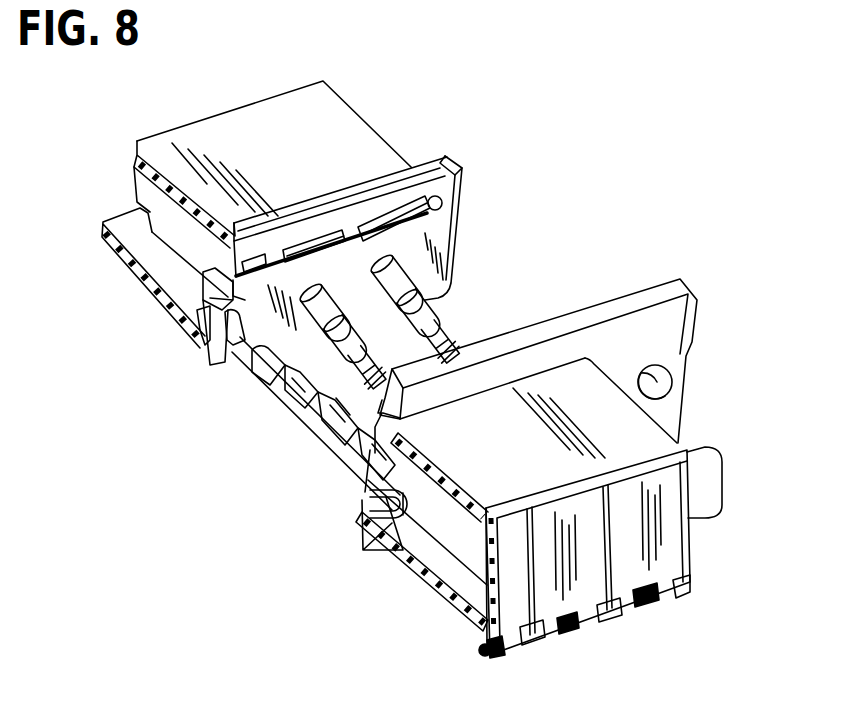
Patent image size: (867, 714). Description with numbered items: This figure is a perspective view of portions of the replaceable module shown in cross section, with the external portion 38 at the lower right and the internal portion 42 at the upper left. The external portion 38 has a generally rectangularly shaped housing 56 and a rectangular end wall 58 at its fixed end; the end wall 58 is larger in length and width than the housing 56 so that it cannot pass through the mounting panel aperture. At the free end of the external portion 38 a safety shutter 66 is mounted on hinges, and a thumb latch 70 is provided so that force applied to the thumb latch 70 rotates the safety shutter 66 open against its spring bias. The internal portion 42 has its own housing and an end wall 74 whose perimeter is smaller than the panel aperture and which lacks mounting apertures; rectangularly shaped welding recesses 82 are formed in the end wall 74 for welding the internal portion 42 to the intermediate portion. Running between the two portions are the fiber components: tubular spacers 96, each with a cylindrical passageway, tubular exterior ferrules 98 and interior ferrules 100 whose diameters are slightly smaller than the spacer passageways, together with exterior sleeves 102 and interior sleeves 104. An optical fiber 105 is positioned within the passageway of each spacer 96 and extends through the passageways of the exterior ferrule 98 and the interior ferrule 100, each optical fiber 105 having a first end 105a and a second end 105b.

The external portion 38 is at (726, 352).
The internal portion 42 is at (386, 112).
The housing 56 is at (628, 435).
The end wall 58 is at (688, 290).
The safety shutter 66 is at (490, 668).
The thumb latch 70 is at (708, 486).
The end wall 74 is at (458, 162).
The welding recesses 82 is at (319, 245).
The spacers 96 is at (293, 400).
The exterior ferrules 98 is at (363, 478).
The interior ferrules 100 is at (262, 375).
The exterior sleeves 102 is at (368, 492).
The interior sleeves 104 is at (223, 357).
The optical fibers 105 is at (453, 322).
The first end 105a is at (387, 490).
The second end 105b is at (200, 321).